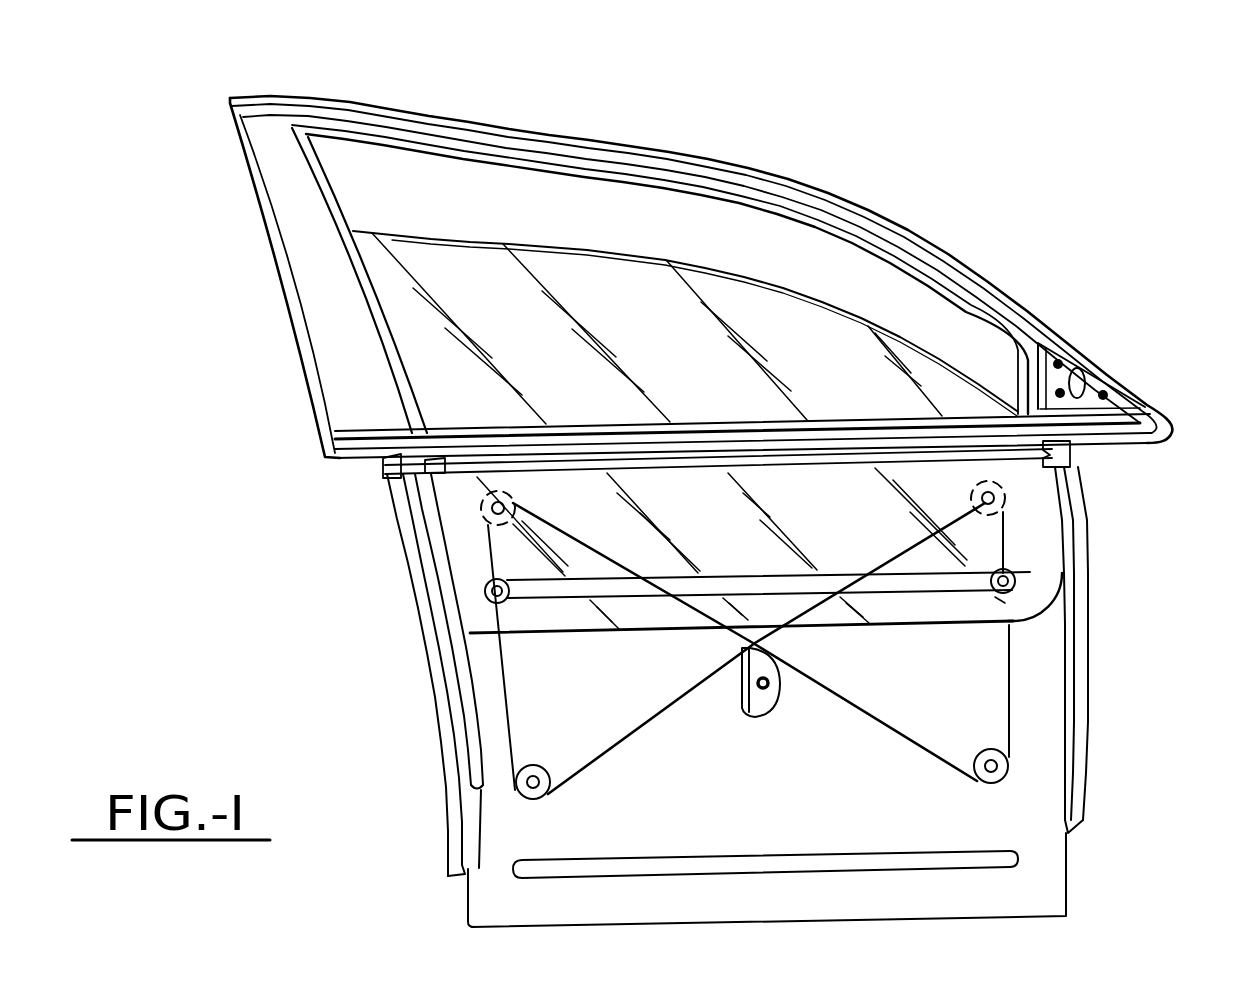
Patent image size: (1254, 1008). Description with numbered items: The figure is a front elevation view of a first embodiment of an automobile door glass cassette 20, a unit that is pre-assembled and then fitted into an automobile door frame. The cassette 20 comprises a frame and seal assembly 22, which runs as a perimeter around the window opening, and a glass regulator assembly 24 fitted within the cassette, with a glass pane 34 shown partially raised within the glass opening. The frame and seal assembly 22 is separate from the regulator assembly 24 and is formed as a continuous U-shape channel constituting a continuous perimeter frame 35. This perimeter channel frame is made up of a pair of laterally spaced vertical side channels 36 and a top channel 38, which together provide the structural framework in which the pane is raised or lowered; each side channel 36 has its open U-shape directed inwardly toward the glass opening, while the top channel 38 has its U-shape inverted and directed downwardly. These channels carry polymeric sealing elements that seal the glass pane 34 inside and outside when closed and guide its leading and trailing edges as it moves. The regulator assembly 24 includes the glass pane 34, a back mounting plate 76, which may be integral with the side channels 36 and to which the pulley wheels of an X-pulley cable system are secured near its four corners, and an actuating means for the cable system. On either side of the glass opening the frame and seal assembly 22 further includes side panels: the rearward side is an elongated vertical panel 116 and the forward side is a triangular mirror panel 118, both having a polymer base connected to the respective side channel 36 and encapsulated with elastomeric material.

The automobile door glass cassette 20 is at (796, 160).
The frame and seal assembly 22 is at (859, 198).
The glass regulator assembly 24 is at (1010, 838).
The glass pane 34 is at (427, 247).
The continuous perimeter frame 35 is at (458, 160).
The vertical side channels 36 is at (427, 570).
The top channel 38 is at (622, 157).
The back mounting plate 76 is at (484, 903).
The elongated vertical panel 116 is at (337, 327).
The triangular mirror panel 118 is at (1173, 425).